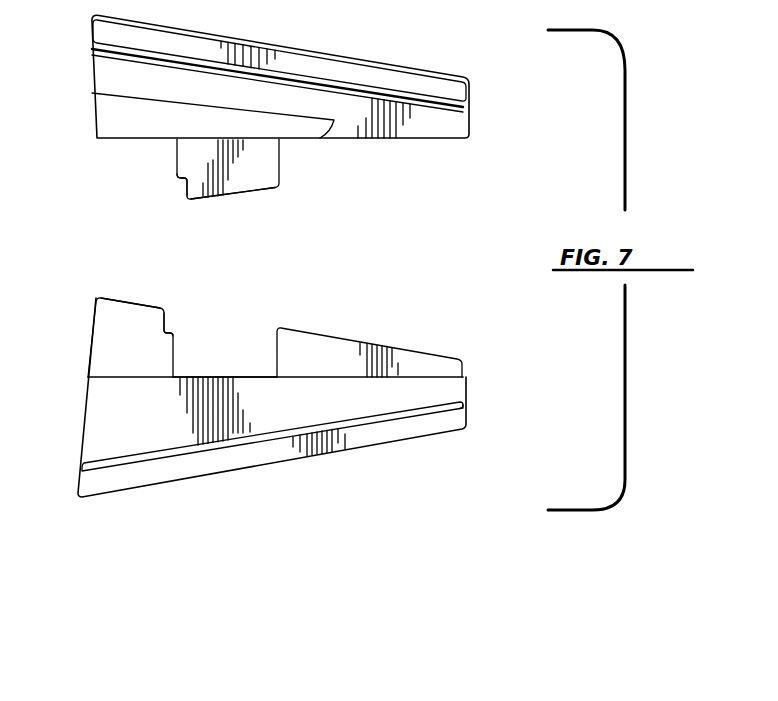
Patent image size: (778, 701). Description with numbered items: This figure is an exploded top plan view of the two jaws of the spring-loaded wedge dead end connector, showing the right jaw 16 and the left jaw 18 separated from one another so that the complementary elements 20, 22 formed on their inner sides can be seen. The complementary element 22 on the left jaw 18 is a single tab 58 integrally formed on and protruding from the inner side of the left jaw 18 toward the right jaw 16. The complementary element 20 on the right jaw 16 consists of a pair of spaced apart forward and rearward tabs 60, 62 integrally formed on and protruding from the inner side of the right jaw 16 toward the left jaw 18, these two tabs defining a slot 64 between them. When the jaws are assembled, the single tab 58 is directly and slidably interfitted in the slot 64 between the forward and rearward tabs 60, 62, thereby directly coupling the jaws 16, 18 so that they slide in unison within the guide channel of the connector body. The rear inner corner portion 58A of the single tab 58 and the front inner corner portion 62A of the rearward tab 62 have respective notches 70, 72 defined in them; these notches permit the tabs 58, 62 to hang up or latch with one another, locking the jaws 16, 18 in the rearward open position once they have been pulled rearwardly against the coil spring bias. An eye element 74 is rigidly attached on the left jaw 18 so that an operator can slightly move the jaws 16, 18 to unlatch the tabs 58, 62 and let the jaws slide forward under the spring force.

The right jaw 16 is at (432, 398).
The left jaw 18 is at (372, 76).
The complementary element 20 is at (298, 315).
The complementary element 22 is at (298, 172).
The single tab 58 is at (250, 175).
The rear inner corner portion 58A is at (227, 199).
The forward tab 60 is at (393, 360).
The rearward tab 62 is at (107, 335).
The front inner corner portion 62A is at (133, 312).
The slot 64 is at (227, 344).
The notch 70 is at (183, 188).
The notch 72 is at (170, 317).
The eye element 74 is at (163, 118).